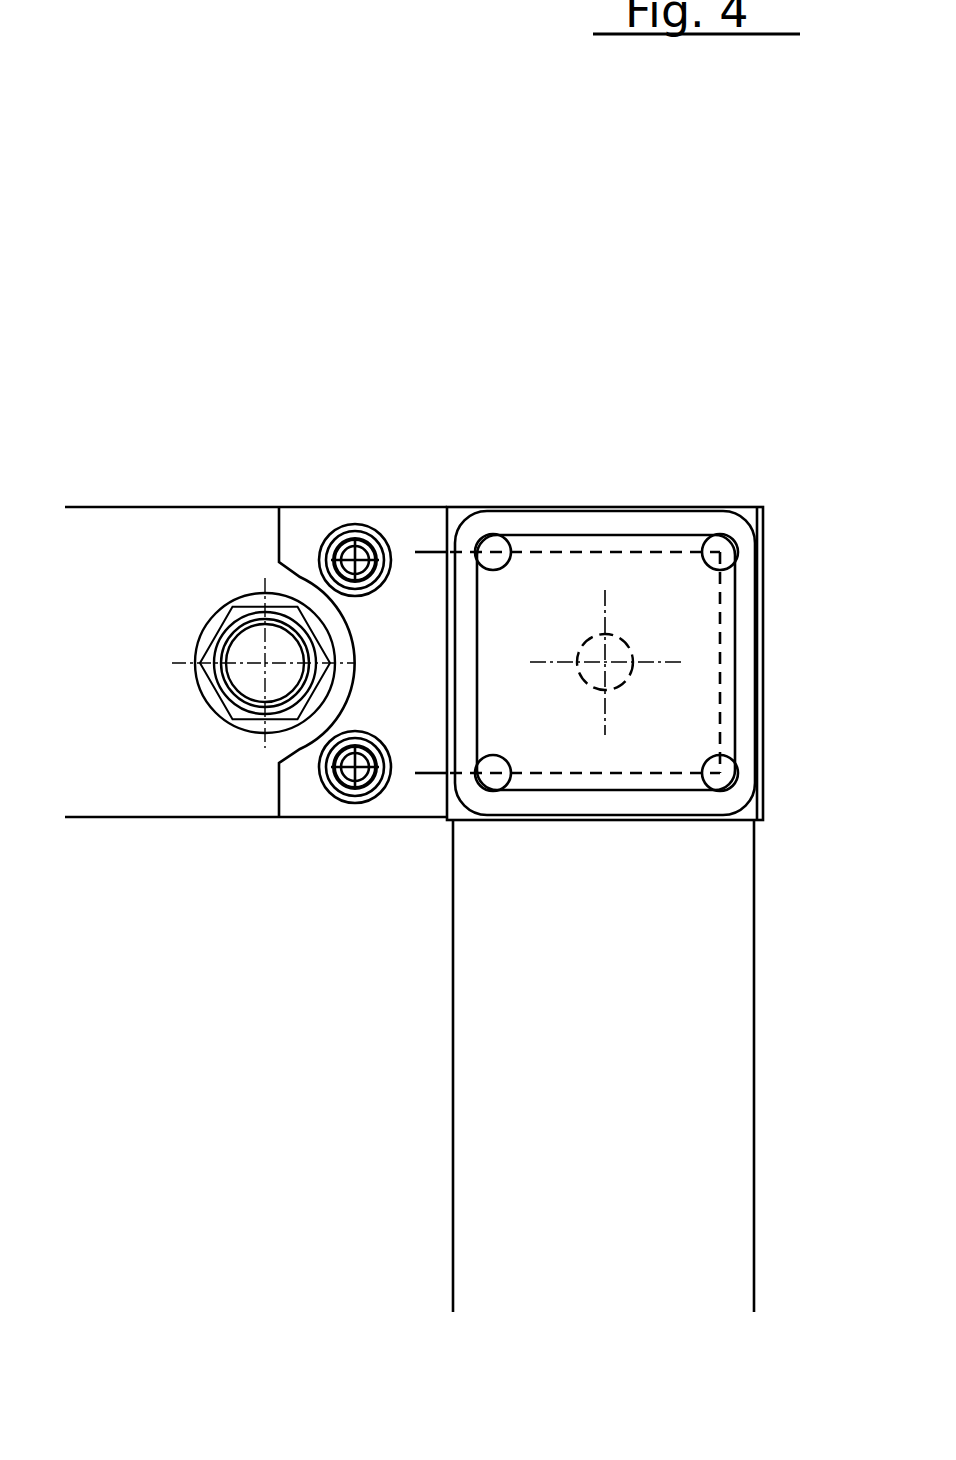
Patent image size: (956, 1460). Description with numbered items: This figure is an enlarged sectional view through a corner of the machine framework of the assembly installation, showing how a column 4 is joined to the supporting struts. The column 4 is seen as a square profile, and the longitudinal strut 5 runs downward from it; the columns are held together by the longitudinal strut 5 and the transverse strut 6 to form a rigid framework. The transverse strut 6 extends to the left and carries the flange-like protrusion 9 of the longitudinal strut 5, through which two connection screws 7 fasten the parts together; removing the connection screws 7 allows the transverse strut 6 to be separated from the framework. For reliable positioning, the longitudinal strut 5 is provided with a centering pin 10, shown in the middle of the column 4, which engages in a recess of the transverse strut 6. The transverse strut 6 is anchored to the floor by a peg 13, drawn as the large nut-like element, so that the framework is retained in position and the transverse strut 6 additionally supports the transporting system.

The column 4 is at (590, 525).
The longitudinal strut 5 is at (690, 943).
The transverse strut 6 is at (168, 538).
The connection screw 7 is at (336, 790).
The flange-like protrusion 9 is at (413, 523).
The centering pin 10 is at (617, 650).
The peg 13 is at (243, 675).